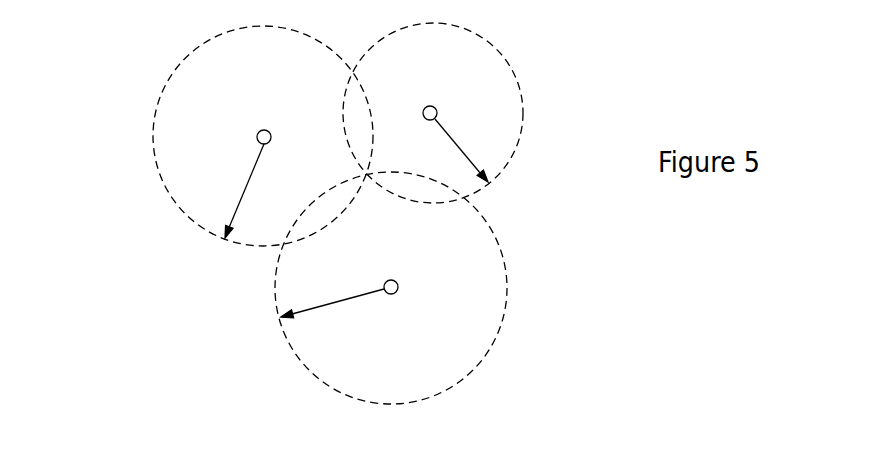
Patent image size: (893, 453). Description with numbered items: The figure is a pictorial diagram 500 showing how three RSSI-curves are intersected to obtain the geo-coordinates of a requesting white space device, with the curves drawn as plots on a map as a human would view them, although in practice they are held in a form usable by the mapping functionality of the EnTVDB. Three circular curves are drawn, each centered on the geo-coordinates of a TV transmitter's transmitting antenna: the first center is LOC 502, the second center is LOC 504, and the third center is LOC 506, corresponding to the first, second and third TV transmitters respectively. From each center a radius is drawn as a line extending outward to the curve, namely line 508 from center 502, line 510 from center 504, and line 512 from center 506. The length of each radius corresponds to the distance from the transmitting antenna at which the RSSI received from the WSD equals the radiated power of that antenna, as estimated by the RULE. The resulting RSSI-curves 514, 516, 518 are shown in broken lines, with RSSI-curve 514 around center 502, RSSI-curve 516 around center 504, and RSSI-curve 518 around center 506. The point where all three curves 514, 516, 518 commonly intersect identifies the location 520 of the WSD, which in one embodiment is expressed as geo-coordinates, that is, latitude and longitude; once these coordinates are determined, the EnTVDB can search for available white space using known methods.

The pictorial diagram 500 is at (170, 40).
The LOC-1 502 is at (257, 137).
The LOC-2 504 is at (440, 113).
The LOC-3 506 is at (398, 287).
The radius line 508 is at (237, 202).
The radius line 510 is at (463, 147).
The radius line 512 is at (312, 306).
The RSSI-curve 514 is at (151, 136).
The RSSI-curve 516 is at (513, 160).
The RSSI-curve 518 is at (297, 357).
The location of the WSD 520 is at (370, 198).